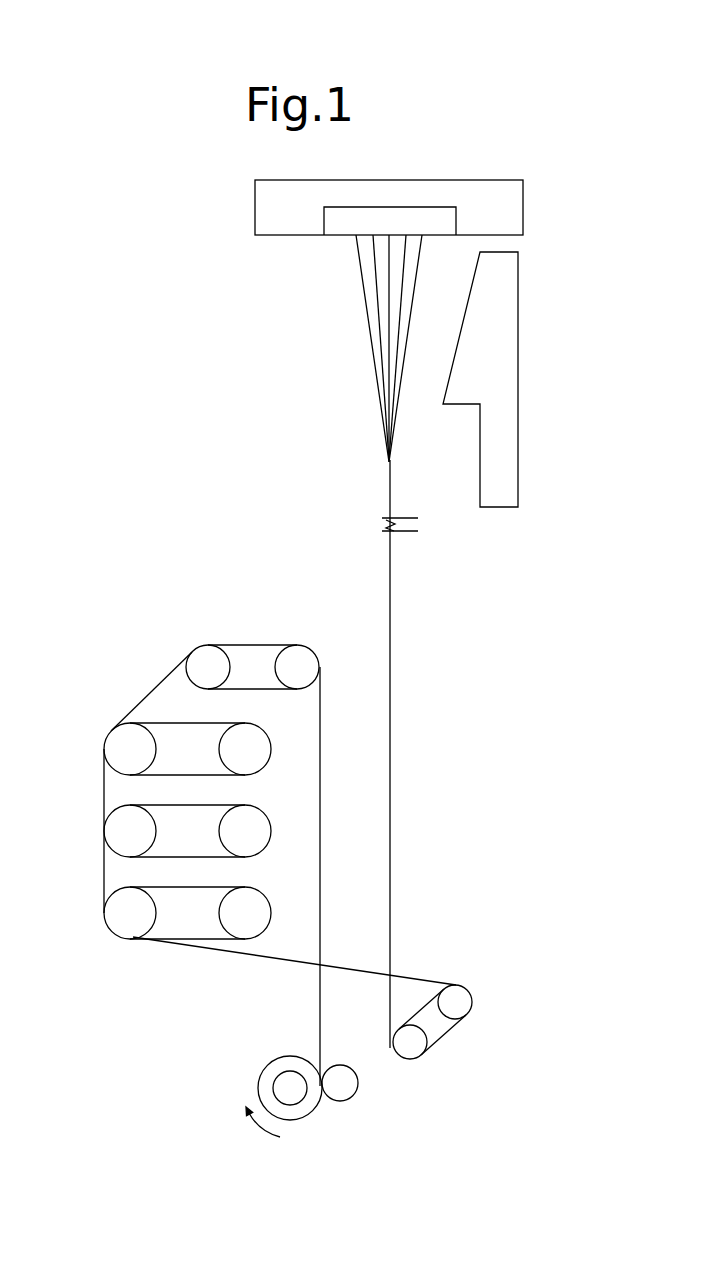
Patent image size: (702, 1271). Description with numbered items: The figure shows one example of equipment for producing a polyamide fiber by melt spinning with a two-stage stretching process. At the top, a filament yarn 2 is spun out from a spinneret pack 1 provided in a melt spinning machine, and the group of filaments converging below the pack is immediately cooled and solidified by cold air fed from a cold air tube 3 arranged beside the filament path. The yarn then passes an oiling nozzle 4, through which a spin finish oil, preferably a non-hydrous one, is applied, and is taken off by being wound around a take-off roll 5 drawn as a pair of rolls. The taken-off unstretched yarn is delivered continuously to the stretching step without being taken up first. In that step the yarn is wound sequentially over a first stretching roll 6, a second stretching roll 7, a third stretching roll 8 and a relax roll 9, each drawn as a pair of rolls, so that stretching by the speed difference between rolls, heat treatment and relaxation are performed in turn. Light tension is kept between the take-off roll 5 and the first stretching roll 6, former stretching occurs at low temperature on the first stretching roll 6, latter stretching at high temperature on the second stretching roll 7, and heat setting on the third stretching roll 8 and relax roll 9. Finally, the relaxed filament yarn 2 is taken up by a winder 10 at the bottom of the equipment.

The spinneret pack 1 is at (345, 221).
The filament yarn 2 is at (372, 357).
The cold air tube 3 is at (495, 320).
The oiling nozzle 4 is at (403, 535).
The take-off roll 5 is at (410, 1053).
The first stretching roll 6 is at (243, 927).
The second stretching roll 7 is at (240, 833).
The third stretching roll 8 is at (233, 745).
The relax roll 9 is at (290, 660).
The winder 10 is at (343, 1085).